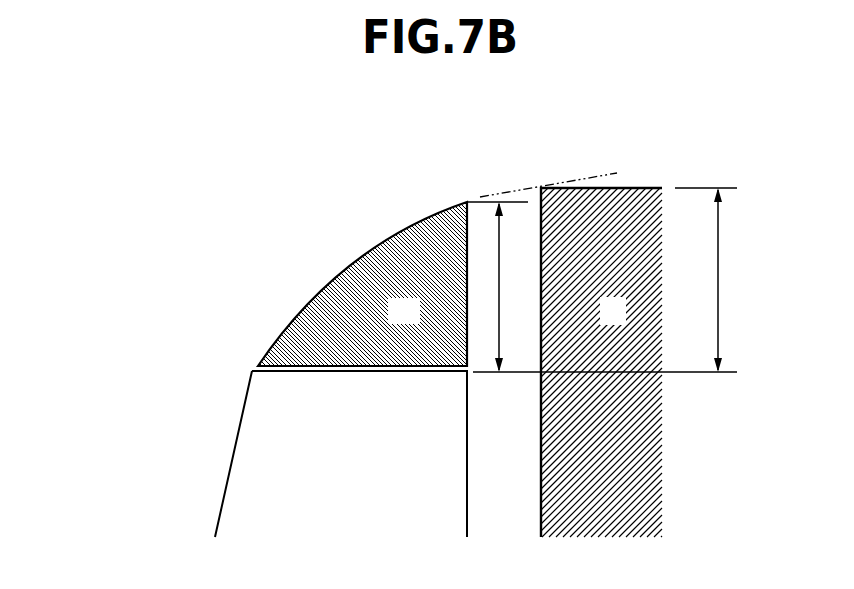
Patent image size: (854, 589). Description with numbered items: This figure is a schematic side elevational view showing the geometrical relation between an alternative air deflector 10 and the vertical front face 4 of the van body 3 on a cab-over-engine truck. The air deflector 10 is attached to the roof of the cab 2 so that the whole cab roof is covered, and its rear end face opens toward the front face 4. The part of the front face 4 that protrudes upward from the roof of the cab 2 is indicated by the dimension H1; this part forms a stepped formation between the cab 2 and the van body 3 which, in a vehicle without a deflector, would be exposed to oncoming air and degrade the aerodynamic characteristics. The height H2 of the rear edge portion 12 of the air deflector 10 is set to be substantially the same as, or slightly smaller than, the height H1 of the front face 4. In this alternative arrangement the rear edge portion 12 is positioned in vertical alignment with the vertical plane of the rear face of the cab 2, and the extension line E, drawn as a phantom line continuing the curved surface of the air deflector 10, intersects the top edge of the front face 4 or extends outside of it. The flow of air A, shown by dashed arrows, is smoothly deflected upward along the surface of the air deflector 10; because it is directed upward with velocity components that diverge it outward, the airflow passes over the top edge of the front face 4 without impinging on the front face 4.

The cab 2 is at (341, 454).
The van body 3 is at (601, 362).
The front face 4 is at (538, 429).
The air deflector 10 is at (362, 284).
The rear edge portion 12 is at (467, 349).
The extension lines E is at (506, 195).
The flow of air A is at (318, 230).
The height of the front face H1 is at (718, 280).
The height of the rear edge portion H2 is at (499, 287).